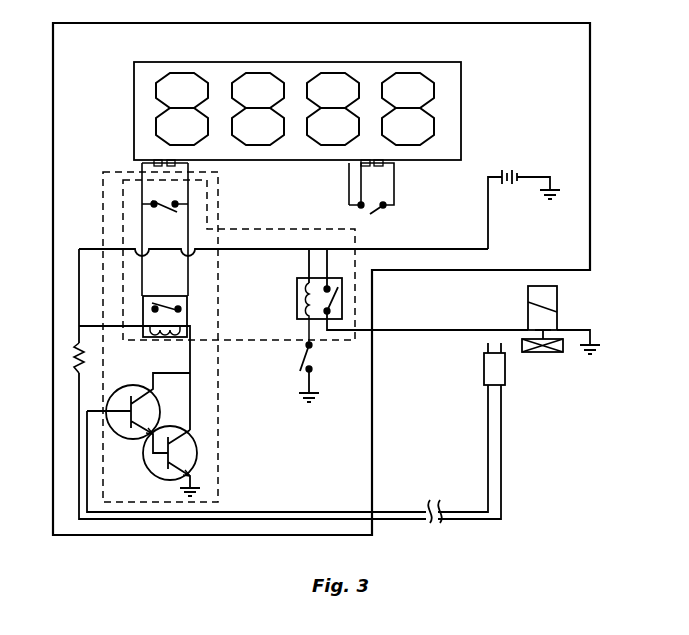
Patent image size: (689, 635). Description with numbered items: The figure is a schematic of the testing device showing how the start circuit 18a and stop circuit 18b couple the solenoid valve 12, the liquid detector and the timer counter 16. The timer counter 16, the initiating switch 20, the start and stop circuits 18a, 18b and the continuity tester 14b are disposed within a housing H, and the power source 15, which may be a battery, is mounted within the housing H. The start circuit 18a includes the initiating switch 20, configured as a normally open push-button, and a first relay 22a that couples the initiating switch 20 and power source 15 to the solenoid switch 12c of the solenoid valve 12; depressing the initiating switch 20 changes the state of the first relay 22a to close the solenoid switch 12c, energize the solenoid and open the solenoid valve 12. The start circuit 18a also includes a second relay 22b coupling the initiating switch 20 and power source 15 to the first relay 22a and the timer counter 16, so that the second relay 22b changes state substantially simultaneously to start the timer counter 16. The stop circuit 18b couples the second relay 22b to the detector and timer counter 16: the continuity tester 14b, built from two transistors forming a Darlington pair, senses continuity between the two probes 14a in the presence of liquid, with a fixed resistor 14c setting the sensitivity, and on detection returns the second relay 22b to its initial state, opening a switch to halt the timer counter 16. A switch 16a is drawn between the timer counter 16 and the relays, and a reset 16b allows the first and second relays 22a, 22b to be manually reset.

The housing H is at (590, 130).
The timer counter 16 is at (461, 90).
The first display switch 16a is at (152, 204).
The reset 16b is at (394, 183).
The start circuit 18a is at (263, 229).
The stop circuit 18b is at (218, 492).
The first relay 22a is at (297, 293).
The second relay 22b is at (187, 318).
The initiating switch 20 is at (300, 360).
The power source 15 is at (518, 182).
The solenoid valve 12 is at (557, 298).
The solenoid switch 12c is at (550, 352).
The probes 14a is at (505, 370).
The continuity tester 14b is at (196, 458).
The resistor 14c is at (76, 350).